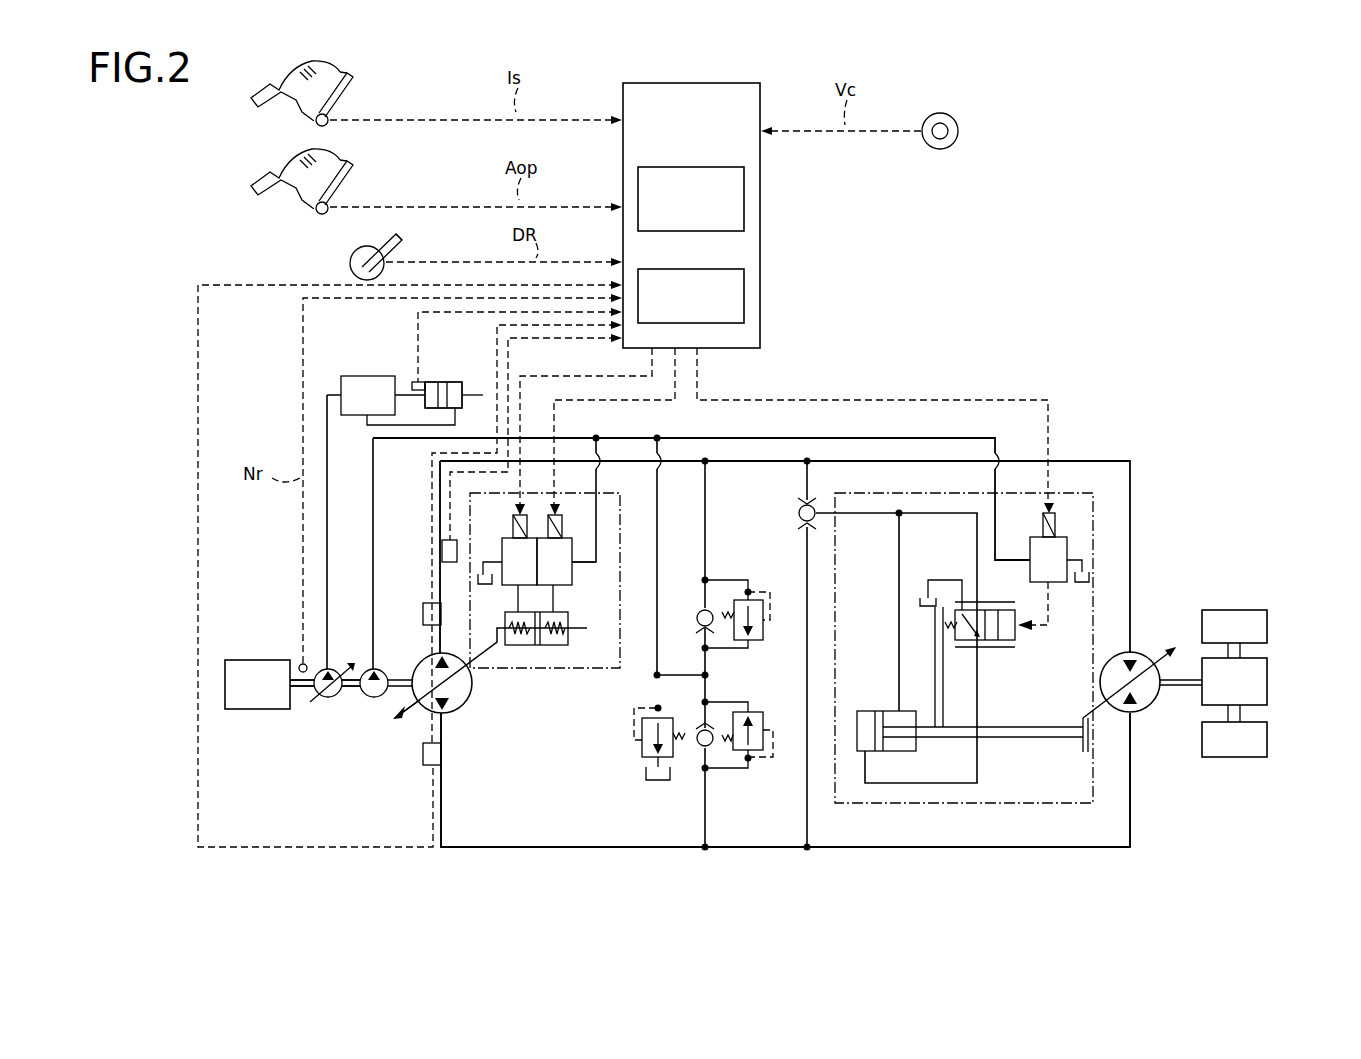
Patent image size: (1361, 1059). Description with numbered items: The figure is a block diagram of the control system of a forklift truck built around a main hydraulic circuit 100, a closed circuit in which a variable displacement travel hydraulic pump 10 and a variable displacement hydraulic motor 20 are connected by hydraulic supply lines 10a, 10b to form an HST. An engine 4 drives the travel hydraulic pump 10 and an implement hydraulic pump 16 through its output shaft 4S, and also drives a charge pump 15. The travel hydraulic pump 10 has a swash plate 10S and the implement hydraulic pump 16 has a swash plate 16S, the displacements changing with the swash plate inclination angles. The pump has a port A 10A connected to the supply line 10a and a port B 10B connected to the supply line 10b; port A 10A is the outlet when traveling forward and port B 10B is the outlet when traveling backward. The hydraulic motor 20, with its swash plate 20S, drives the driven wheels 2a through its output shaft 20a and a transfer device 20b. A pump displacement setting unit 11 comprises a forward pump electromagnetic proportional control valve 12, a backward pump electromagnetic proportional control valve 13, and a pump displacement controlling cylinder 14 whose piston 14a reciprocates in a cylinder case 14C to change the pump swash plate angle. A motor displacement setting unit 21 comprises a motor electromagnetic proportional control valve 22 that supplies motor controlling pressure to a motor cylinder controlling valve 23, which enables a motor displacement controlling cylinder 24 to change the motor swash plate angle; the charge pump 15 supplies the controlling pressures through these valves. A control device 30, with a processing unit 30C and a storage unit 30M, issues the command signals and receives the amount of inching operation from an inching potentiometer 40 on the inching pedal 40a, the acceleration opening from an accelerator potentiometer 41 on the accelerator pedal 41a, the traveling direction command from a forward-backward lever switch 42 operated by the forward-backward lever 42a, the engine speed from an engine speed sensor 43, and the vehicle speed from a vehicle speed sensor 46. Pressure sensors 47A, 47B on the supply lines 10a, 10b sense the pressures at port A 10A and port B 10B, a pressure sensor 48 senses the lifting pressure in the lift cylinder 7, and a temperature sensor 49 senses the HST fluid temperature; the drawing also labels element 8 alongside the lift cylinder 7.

The driven wheels 2a is at (1267, 625).
The engine 4 is at (248, 709).
The output shaft 4S is at (300, 703).
The lift cylinder 7 is at (432, 380).
The hydraulic actuator 8 is at (443, 395).
The travel hydraulic pump 10 is at (458, 703).
The port A 10A is at (441, 652).
The port B 10B is at (438, 715).
The swash plate 10S is at (407, 718).
The hydraulic supply line 10a is at (735, 466).
The hydraulic supply line 10b is at (512, 847).
The pump displacement setting unit 11 is at (600, 668).
The forward pump electromagnetic proportional control valve 12 is at (565, 585).
The backward pump electromagnetic proportional control valve 13 is at (508, 585).
The pump displacement controlling cylinder 14 is at (588, 765).
The piston 14a is at (520, 645).
The cylinder case 14C is at (553, 645).
The charge pump 15 is at (370, 703).
The implement hydraulic pump 16 is at (327, 703).
The swash plate 16S is at (318, 703).
The hydraulic motor 20 is at (1132, 712).
The swash plate 20S is at (1160, 650).
The output shaft 20a is at (1188, 690).
The transfer device 20b is at (1267, 680).
The motor displacement setting unit 21 is at (940, 803).
The motor electromagnetic proportional control valve 22 is at (1058, 582).
The motor cylinder controlling valve 23 is at (1000, 650).
The motor displacement controlling cylinder 24 is at (868, 711).
The control device 30 is at (705, 83).
The processing unit 30C is at (690, 167).
The storage unit 30M is at (690, 269).
The inching potentiometer 40 is at (342, 98).
The inching pedal 40a is at (352, 72).
The accelerator potentiometer 41 is at (342, 186).
The accelerator pedal 41a is at (352, 160).
The forward-backward lever switch 42 is at (352, 268).
The forward-backward lever 42a is at (402, 235).
The engine speed sensor 43 is at (300, 663).
The vehicle speed sensor 46 is at (948, 114).
The pressure sensor 47A is at (430, 603).
The pressure sensor 47B is at (445, 765).
The pressure sensor 48 is at (412, 382).
The temperature sensor 49 is at (440, 540).
The main hydraulic circuit 100 is at (1036, 860).